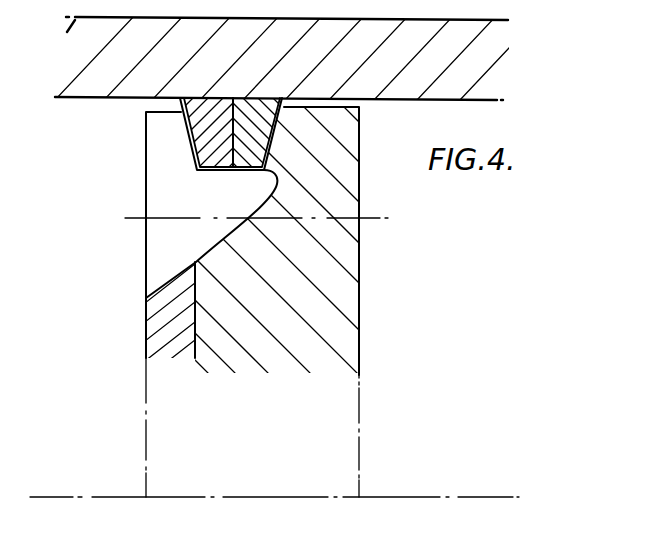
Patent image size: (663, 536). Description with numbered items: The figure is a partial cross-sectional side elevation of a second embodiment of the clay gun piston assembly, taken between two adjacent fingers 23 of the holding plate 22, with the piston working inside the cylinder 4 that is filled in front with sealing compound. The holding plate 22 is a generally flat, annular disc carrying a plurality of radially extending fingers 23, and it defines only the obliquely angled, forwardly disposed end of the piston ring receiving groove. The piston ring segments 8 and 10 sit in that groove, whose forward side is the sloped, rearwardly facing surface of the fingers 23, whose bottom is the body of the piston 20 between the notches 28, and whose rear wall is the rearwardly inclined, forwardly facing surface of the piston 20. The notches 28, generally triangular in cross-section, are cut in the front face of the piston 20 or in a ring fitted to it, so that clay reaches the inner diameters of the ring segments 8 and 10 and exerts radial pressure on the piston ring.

The cylinder 4 is at (97, 86).
The piston ring segment 8 is at (198, 127).
The piston ring segment 10 is at (258, 127).
The piston 20 is at (351, 278).
The holding plate 22 is at (157, 312).
The fingers 23 is at (148, 173).
The notches 28 is at (227, 233).